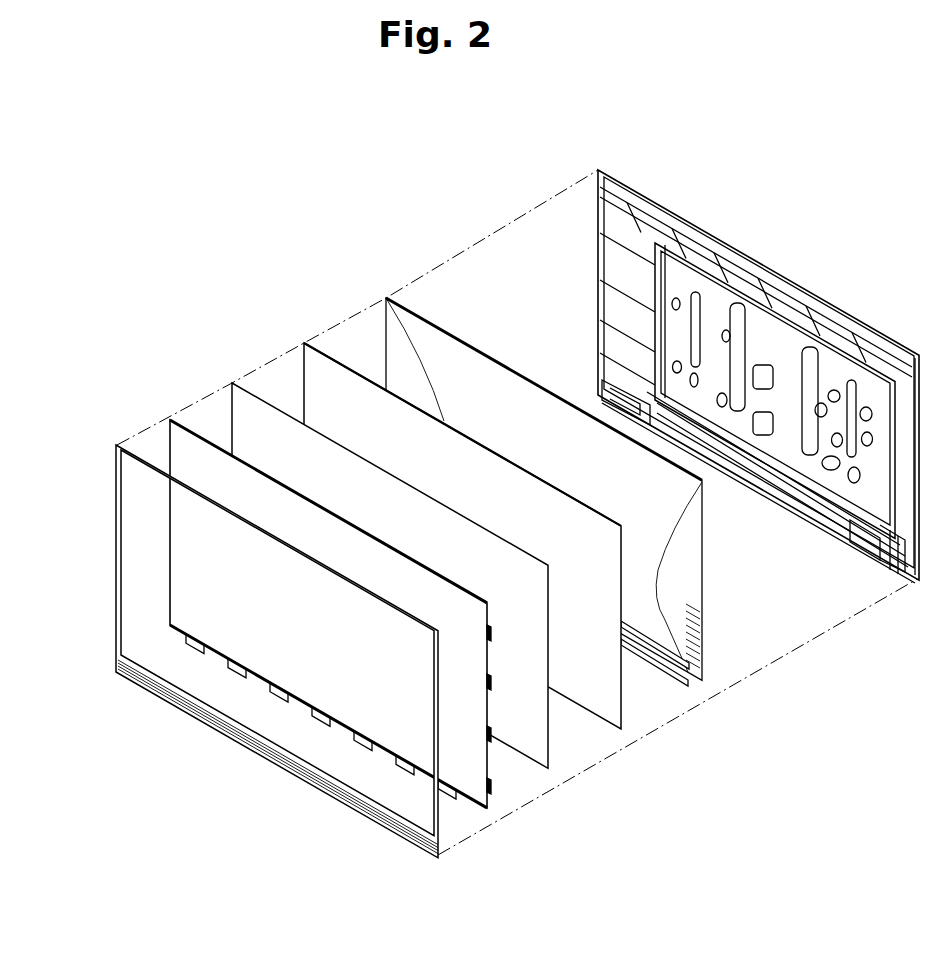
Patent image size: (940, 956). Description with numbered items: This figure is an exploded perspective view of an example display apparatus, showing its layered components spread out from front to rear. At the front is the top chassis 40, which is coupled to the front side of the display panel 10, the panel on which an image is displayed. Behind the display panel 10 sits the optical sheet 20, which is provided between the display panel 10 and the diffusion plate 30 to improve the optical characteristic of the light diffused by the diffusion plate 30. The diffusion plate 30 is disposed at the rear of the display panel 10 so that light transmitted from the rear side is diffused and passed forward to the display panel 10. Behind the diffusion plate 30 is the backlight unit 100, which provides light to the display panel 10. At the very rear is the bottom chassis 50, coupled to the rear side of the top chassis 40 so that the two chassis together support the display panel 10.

The display panel 10 is at (190, 426).
The optical sheet 20 is at (244, 389).
The diffusion plate 30 is at (316, 348).
The top chassis 40 is at (137, 451).
The bottom chassis 50 is at (610, 174).
The backlight unit 100 is at (399, 302).